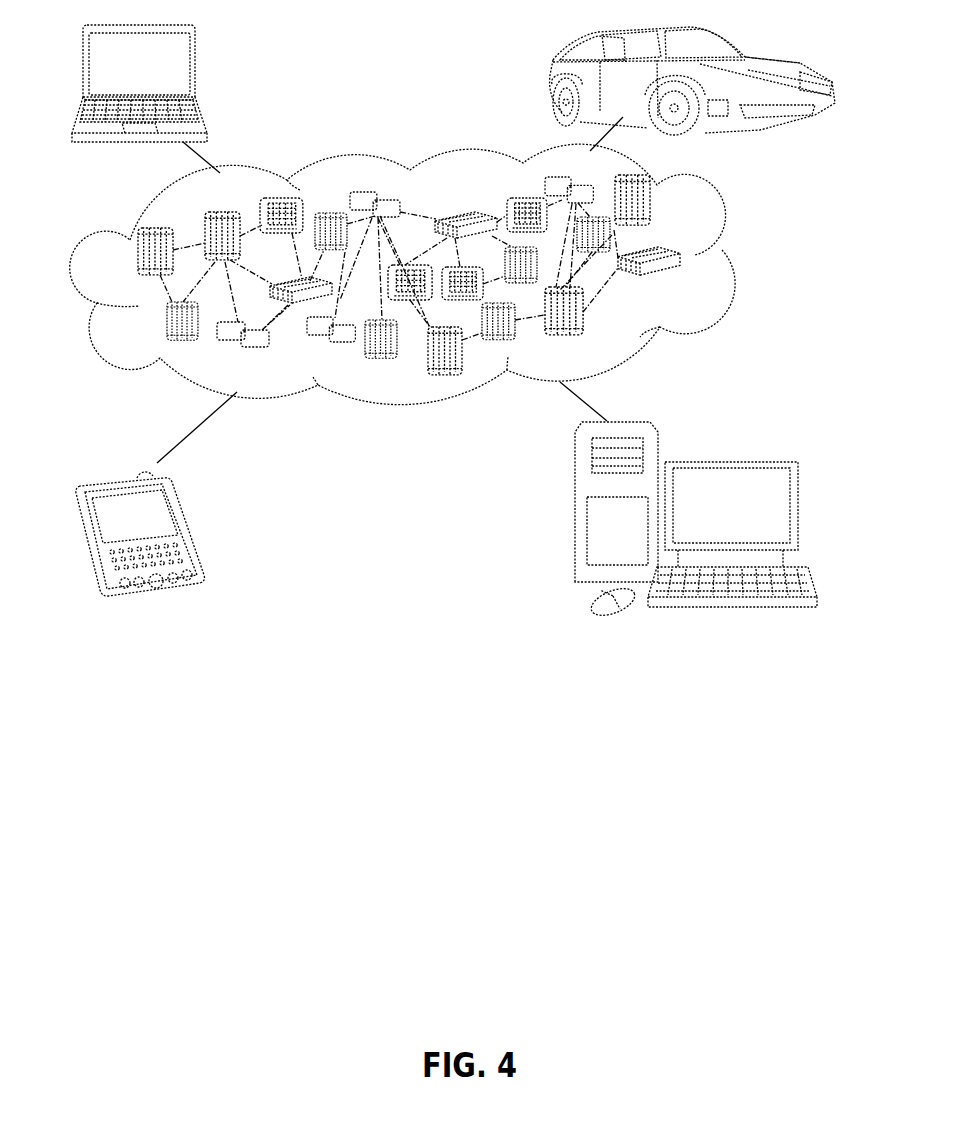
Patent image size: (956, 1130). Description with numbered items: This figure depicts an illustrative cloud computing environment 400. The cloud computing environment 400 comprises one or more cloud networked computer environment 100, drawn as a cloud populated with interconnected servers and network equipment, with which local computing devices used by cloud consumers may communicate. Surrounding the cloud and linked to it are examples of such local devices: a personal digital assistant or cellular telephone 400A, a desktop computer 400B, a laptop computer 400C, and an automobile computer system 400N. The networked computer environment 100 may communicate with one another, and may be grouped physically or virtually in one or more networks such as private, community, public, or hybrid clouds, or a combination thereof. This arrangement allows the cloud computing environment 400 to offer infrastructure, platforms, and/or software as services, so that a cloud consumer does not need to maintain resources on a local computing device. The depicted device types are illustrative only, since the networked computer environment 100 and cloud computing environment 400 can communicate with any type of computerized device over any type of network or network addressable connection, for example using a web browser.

The laptop computer 400C is at (196, 72).
The automobile computer system 400N is at (552, 81).
The cloud computing environment 400 is at (728, 258).
The networked computer environment 100 is at (690, 283).
The personal digital assistant (PDA) or cellular telephone 400A is at (187, 527).
The desktop computer 400B is at (728, 462).